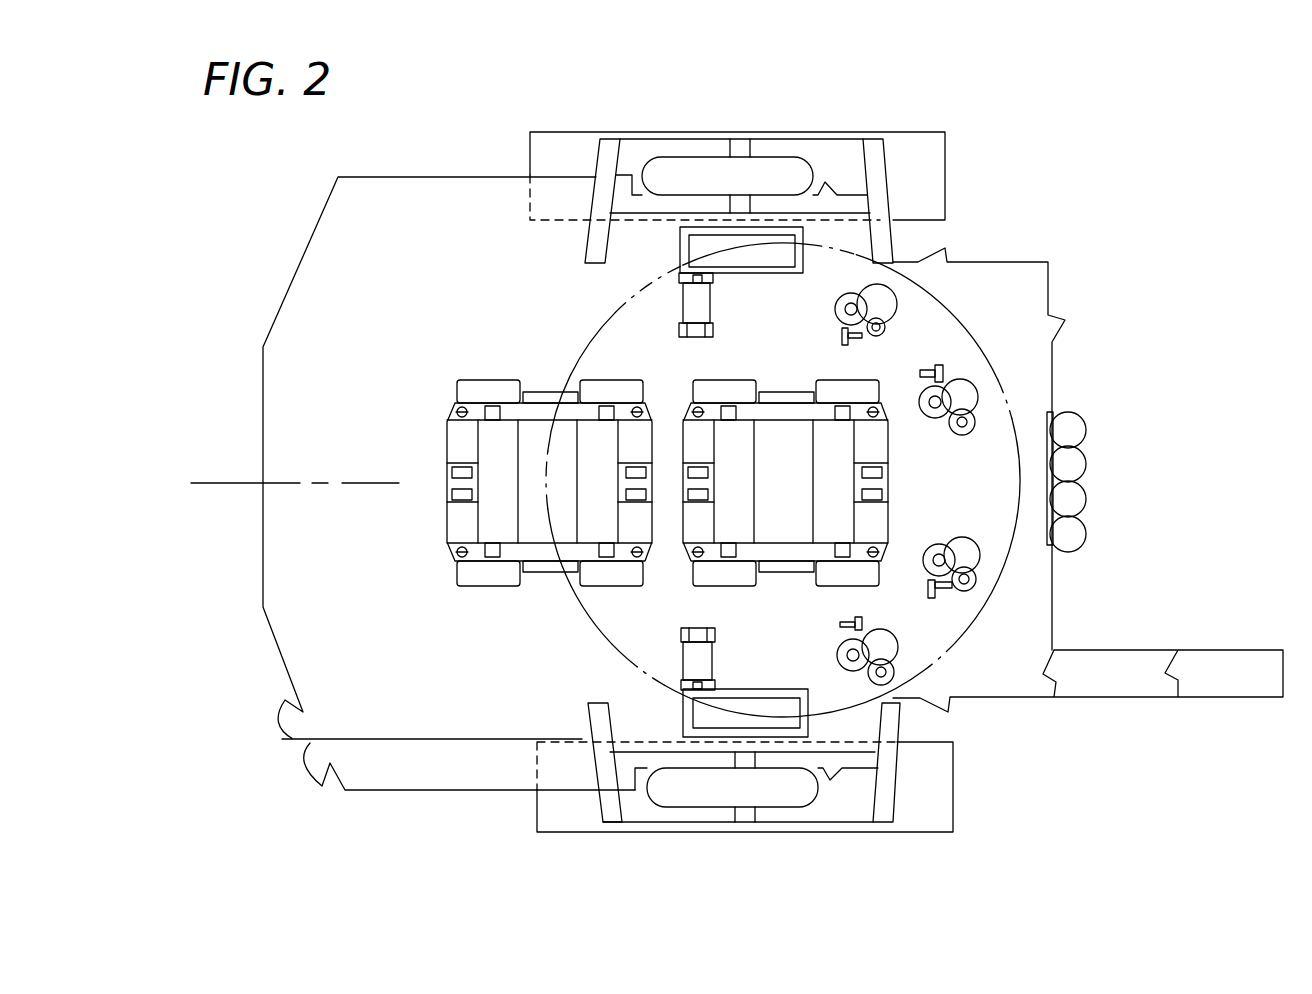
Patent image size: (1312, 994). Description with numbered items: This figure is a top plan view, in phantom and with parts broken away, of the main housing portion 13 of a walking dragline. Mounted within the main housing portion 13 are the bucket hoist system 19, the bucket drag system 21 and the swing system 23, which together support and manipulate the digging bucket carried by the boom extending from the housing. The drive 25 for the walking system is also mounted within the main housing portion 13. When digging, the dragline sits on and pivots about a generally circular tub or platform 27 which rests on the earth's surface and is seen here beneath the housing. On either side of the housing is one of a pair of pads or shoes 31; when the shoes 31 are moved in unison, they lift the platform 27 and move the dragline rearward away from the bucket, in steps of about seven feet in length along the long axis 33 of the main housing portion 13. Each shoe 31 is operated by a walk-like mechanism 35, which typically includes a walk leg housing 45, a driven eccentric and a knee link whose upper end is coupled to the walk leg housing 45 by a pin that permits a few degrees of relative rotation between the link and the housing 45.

The main housing portion 13 is at (393, 187).
The bucket hoist system 19 is at (853, 381).
The bucket drag system 21 is at (497, 380).
The swing system 23 is at (885, 632).
The drive 25 is at (733, 688).
The tub or platform 27 is at (978, 338).
The pads or shoes 31 is at (1010, 786).
The long axis 33 is at (277, 483).
The walk-like mechanism 35 is at (800, 814).
The walk leg housing 45 is at (680, 792).